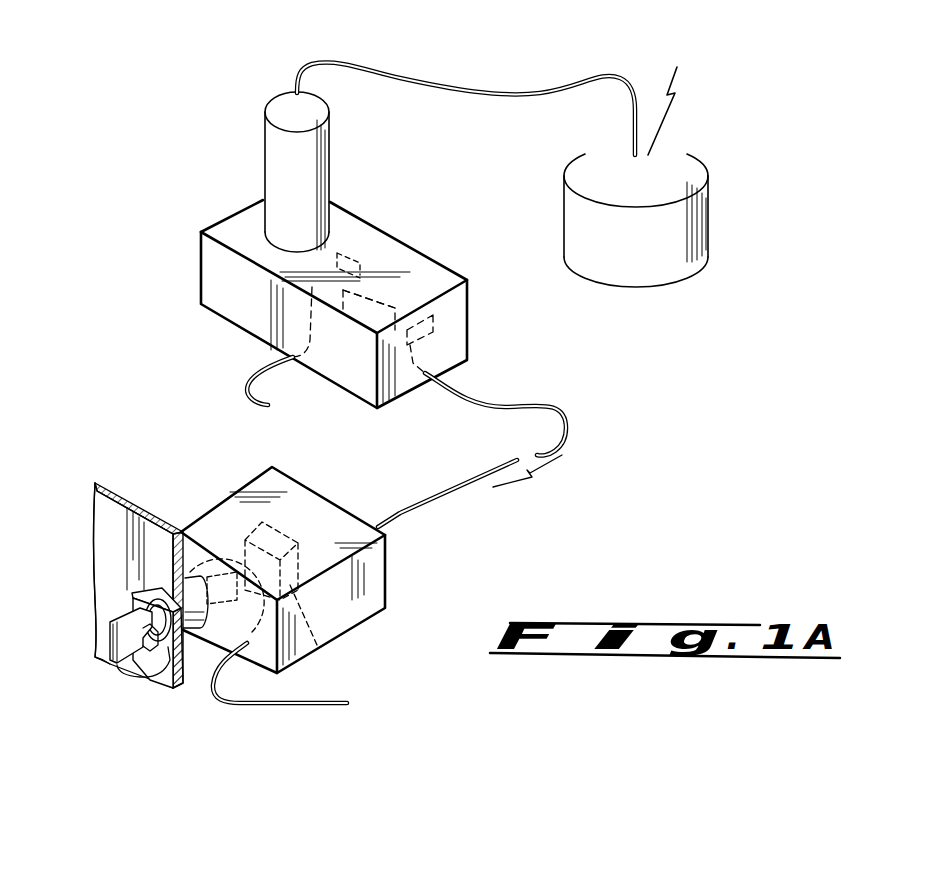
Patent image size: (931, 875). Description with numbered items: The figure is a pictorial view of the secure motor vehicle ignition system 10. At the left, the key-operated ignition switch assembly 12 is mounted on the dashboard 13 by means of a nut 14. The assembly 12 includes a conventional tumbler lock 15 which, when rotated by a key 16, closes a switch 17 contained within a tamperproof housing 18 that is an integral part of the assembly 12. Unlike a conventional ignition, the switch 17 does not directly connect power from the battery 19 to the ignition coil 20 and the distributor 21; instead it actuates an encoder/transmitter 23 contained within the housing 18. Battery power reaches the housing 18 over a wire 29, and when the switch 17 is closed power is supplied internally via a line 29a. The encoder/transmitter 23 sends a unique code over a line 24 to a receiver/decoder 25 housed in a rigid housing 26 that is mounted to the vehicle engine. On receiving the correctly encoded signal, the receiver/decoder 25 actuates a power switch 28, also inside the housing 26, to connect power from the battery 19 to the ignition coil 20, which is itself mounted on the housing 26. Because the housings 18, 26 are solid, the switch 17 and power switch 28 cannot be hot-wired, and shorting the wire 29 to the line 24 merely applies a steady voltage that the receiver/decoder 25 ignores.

The secure motor vehicle ignition system 10 is at (607, 370).
The key-operated ignition switch assembly 12 is at (172, 503).
The dashboard 13 is at (105, 600).
The nut 14 is at (167, 670).
The tumbler lock 15 is at (153, 648).
The key 16 is at (107, 633).
The switch 17 is at (218, 570).
The tamperproof housing 18 is at (380, 583).
The battery 19 is at (574, 717).
The ignition coil 20 is at (218, 163).
The distributor 21 is at (646, 262).
The encoder/transmitter 23 is at (298, 542).
The line 24 is at (490, 408).
The receiver/decoder 25 is at (447, 260).
The rigid housing 26 is at (418, 302).
The power switch 28 is at (334, 256).
The wire 29 is at (265, 707).
The line 29a is at (318, 647).